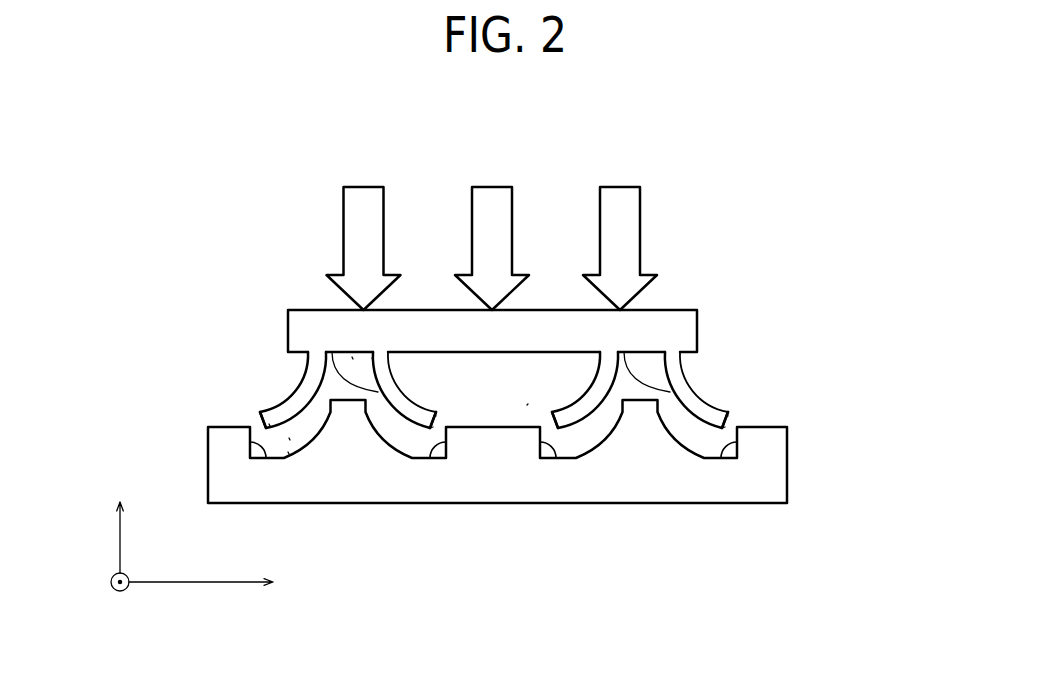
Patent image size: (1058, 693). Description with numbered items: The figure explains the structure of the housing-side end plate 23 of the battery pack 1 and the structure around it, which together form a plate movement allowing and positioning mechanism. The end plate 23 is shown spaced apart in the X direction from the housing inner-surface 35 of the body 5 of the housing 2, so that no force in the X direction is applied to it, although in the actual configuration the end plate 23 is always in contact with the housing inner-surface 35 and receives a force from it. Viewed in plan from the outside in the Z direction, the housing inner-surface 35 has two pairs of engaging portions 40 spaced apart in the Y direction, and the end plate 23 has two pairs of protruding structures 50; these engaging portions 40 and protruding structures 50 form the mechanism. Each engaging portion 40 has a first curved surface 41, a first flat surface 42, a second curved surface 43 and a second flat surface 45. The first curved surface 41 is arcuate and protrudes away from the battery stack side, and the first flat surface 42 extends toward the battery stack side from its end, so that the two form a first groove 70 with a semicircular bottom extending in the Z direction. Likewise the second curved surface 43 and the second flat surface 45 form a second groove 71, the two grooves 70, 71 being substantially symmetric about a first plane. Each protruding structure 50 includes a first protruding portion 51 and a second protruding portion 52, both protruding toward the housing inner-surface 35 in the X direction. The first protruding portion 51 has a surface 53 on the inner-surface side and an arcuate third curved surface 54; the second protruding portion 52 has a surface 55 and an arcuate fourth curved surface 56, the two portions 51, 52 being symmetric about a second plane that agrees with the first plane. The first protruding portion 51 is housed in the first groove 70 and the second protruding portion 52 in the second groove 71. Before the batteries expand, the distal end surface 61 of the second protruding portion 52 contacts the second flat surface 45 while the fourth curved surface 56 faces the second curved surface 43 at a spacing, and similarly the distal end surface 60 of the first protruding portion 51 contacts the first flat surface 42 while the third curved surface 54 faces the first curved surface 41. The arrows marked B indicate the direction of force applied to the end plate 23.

The battery pack 1 is at (528, 139).
The housing 2 is at (519, 557).
The body 5 is at (650, 505).
The housing-side end plate 23 is at (683, 308).
The housing inner-surface 35 is at (528, 404).
The engaging portion 40 is at (315, 398).
The first curved surface 41 is at (440, 420).
The first flat surface 42 is at (430, 455).
The second curved surface 43 is at (314, 422).
The second flat surface 45 is at (262, 455).
The protruding structure 50 is at (382, 427).
The first protruding portion 51 is at (700, 320).
The second protruding portion 52 is at (261, 412).
The surface 53 is at (352, 357).
The third curved surface 54 is at (378, 392).
The surface 55 is at (270, 428).
The fourth curved surface 56 is at (290, 440).
The distal end surface 60 is at (442, 405).
The distal end surface 61 is at (252, 428).
The first groove 70 is at (440, 418).
The second groove 71 is at (289, 455).
The pressing direction B is at (648, 213).